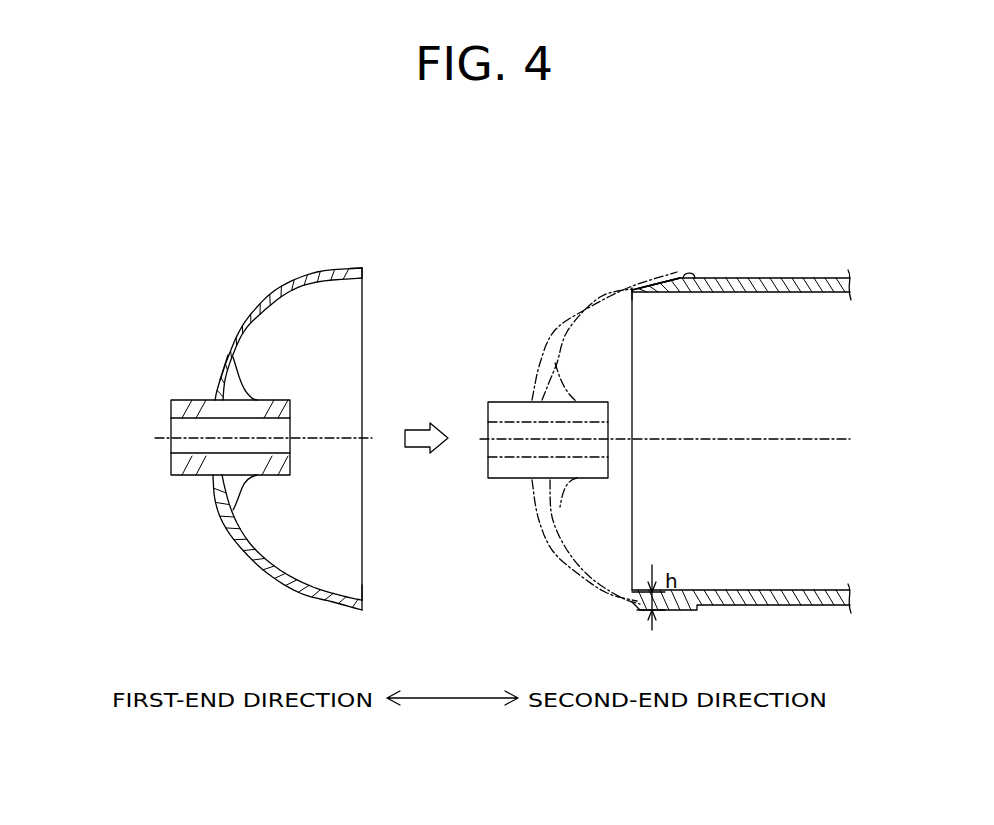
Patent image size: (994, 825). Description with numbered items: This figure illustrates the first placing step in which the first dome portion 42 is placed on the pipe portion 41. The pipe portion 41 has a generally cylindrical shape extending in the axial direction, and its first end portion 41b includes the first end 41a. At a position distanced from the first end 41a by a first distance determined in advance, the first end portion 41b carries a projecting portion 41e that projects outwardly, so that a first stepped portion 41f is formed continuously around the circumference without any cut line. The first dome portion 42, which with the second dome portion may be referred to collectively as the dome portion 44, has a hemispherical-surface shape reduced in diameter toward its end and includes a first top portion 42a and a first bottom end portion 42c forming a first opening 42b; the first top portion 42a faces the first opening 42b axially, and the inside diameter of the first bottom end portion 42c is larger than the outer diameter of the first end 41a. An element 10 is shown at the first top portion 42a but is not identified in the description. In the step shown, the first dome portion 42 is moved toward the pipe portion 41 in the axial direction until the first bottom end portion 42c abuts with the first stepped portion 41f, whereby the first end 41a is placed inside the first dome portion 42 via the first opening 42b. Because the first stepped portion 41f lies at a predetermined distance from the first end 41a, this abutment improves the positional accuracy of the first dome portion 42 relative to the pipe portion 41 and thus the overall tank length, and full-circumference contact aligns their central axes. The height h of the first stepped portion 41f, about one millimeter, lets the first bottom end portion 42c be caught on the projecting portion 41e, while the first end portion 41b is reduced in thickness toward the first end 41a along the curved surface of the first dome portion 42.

The hub / shaft member 10 is at (200, 465).
The pipe portion 41 is at (800, 283).
The first end 41a is at (632, 289).
The first end portion 41b is at (653, 198).
The projecting portion 41e is at (693, 273).
The first stepped portion 41f is at (680, 273).
The first dome portion 42 is at (246, 315).
The dome portion 44 is at (241, 439).
The first top portion 42a is at (216, 371).
The first opening 42b is at (376, 576).
The first bottom end portion 42c is at (363, 268).